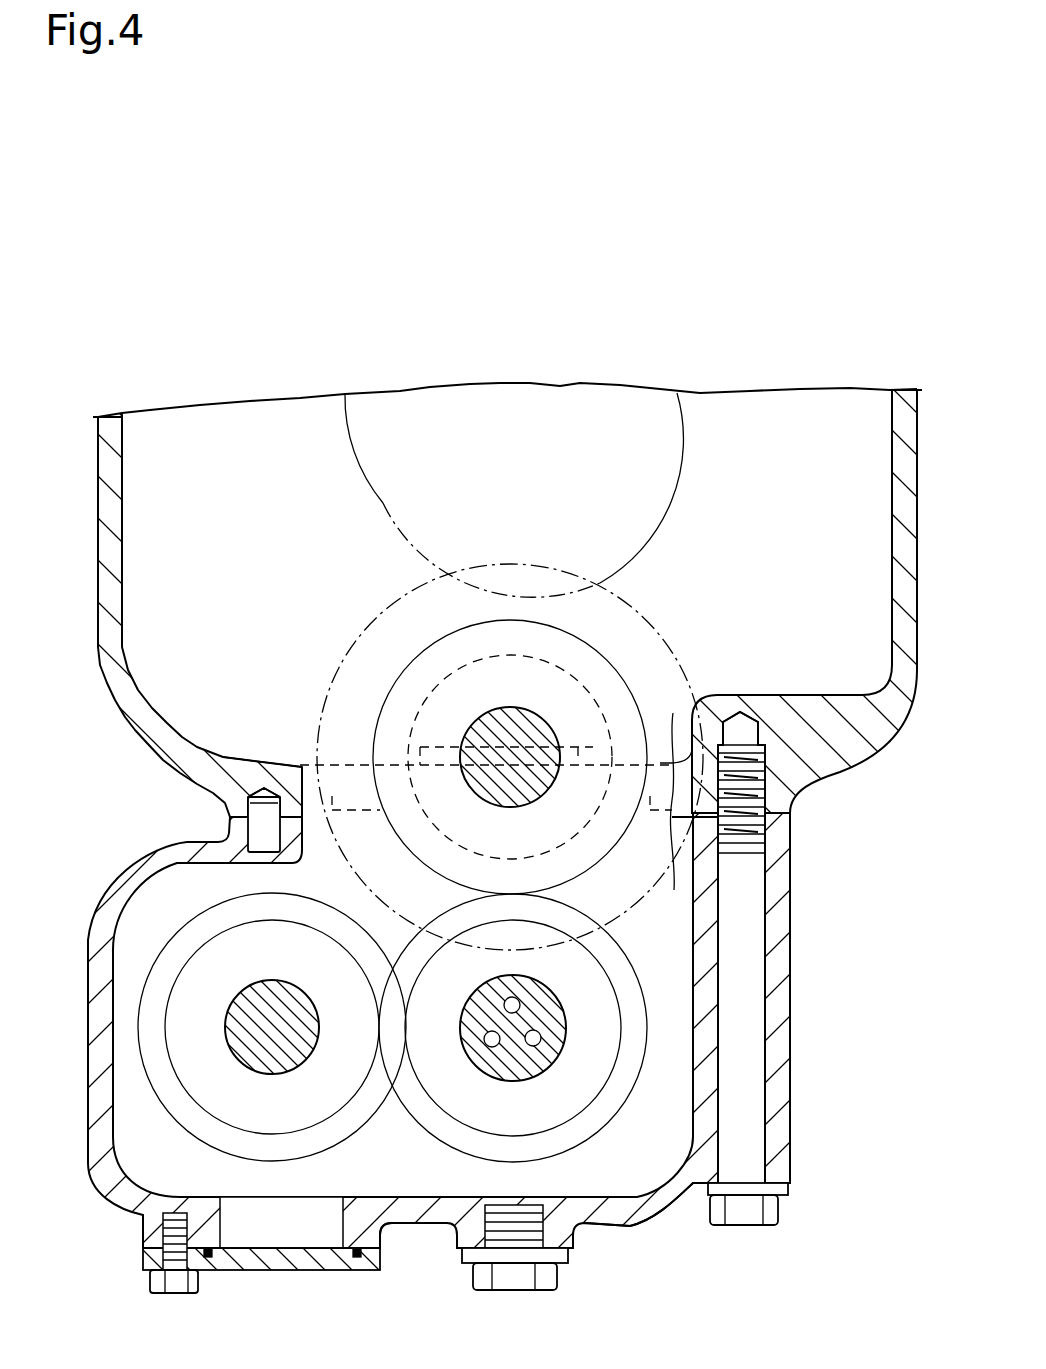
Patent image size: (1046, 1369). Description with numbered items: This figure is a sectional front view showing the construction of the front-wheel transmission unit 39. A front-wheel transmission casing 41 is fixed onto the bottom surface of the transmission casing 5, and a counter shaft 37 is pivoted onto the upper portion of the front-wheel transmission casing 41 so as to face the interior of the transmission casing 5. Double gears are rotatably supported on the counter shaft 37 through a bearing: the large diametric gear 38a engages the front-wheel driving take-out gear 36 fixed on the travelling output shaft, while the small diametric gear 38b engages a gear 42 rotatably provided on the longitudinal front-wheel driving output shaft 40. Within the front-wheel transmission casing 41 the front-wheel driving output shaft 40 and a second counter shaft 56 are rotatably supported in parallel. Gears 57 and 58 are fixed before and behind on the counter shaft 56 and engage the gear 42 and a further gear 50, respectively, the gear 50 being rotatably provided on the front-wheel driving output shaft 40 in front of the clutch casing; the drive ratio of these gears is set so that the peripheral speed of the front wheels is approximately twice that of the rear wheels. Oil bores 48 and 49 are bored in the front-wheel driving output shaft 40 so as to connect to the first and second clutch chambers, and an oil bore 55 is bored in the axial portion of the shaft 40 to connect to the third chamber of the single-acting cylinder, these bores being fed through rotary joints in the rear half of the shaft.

The transmission casing 5 is at (124, 458).
The front-wheel driving take-out gear 36 is at (345, 456).
The counter shaft 37 is at (478, 728).
The large diametric gear 38a is at (385, 598).
The small diametric gear 38b is at (383, 710).
The front-wheel transmission unit 39 is at (628, 1240).
The front-wheel driving output shaft 40 is at (547, 1073).
The front-wheel transmission casing 41 is at (180, 842).
The gear 42 is at (636, 1105).
The oil bore 48 is at (520, 1005).
The oil bore 49 is at (485, 1044).
The gear 50 is at (613, 1092).
The oil bore 55 is at (528, 1045).
The counter shaft 56 is at (240, 993).
The gear 57 is at (170, 1057).
The gear 58 is at (233, 1160).